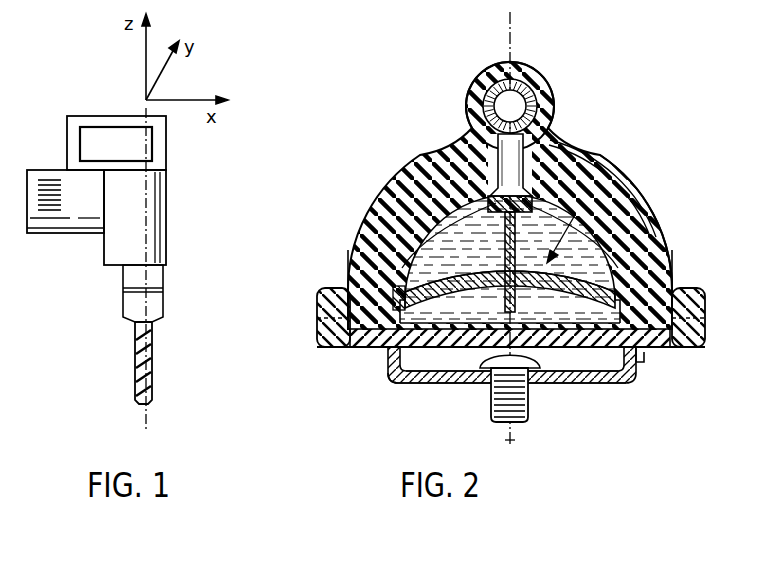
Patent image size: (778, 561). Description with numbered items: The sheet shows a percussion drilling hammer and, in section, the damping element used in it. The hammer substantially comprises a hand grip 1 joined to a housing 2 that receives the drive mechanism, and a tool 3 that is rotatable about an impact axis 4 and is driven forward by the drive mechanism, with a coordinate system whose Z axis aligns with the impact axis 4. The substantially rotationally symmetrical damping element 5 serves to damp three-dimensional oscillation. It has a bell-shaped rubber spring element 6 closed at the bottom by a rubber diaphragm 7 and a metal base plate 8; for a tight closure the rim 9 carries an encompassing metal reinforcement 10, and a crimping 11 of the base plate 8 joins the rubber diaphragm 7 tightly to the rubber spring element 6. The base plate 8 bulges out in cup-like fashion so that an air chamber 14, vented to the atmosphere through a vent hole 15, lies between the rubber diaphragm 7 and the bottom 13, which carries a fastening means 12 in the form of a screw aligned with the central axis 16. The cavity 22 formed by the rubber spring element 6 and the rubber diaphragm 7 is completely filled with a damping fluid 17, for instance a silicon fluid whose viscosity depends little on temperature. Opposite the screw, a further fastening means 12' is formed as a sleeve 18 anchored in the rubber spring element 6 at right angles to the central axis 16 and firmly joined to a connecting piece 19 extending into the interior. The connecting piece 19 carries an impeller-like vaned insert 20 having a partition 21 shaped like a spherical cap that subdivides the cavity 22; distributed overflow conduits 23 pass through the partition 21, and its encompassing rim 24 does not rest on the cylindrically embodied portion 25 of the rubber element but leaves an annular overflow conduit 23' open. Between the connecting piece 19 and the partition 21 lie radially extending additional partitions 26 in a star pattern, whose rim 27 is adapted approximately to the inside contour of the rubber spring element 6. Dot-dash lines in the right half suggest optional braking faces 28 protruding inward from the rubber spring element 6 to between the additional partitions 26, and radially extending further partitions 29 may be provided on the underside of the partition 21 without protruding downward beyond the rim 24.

In FIG. 1, the hand grip 1 is at (158, 158).
In FIG. 1, the housing 2 is at (152, 218).
In FIG. 1, the tool 3 is at (148, 338).
In FIG. 1, the impact axis 4 is at (146, 276).
In FIG. 2, the damping element 5 is at (445, 122).
In FIG. 2, the rubber spring element 6 is at (366, 232).
In FIG. 2, the rubber diaphragm 7 is at (390, 362).
In FIG. 2, the base plate 8 is at (415, 378).
In FIG. 2, the rim 9 is at (706, 322).
In FIG. 2, the metal reinforcement 10 is at (672, 285).
In FIG. 2, the crimping 11 is at (702, 340).
In FIG. 2, the fastening means 12 is at (519, 308).
In FIG. 2, the further fastening means 12' is at (524, 75).
In FIG. 2, the bottom 13 is at (564, 382).
In FIG. 2, the air chamber 14 is at (600, 382).
In FIG. 2, the vent hole 15 is at (642, 366).
In FIG. 2, the central axis 16 is at (515, 446).
In FIG. 2, the damping fluid 17 is at (372, 248).
In FIG. 2, the sleeve 18 is at (490, 80).
In FIG. 2, the connecting piece 19 is at (516, 152).
In FIG. 2, the vaned insert 20 is at (420, 228).
In FIG. 2, the partition 21 is at (390, 214).
In FIG. 2, the cavity 22 is at (458, 253).
In FIG. 2, the overflow conduits 23 is at (443, 277).
In FIG. 2, the annular overflow conduit 23' is at (350, 285).
In FIG. 2, the encompassing rim 24 is at (672, 263).
In FIG. 2, the cylindrically embodied portion 25 is at (668, 242).
In FIG. 2, the additional partitions 26 is at (646, 202).
In FIG. 2, the rim 27 is at (580, 170).
In FIG. 2, the braking faces 28 is at (622, 182).
In FIG. 2, the further partitions 29 is at (506, 292).